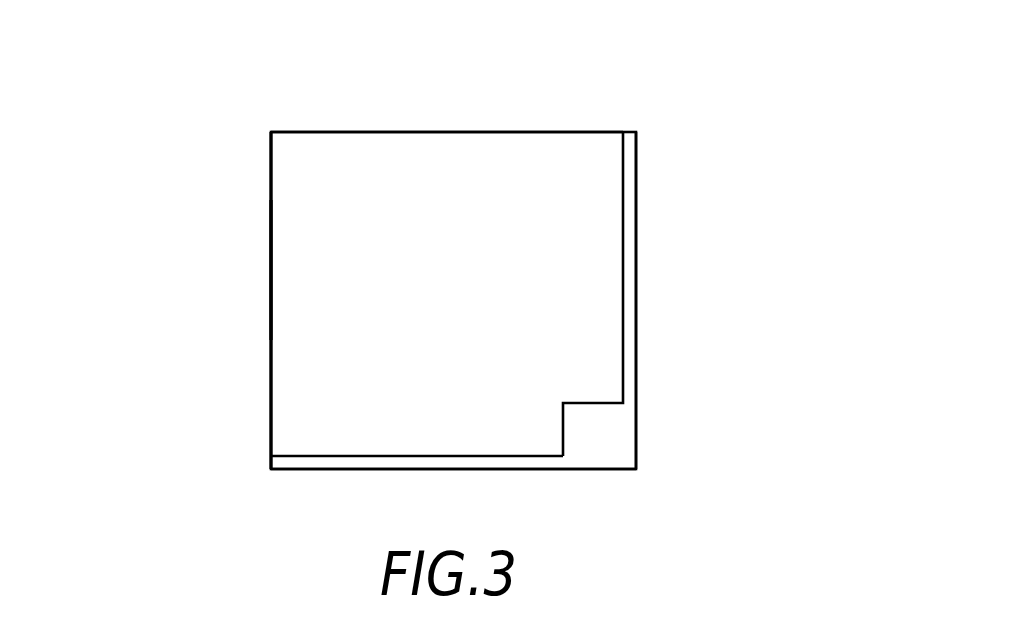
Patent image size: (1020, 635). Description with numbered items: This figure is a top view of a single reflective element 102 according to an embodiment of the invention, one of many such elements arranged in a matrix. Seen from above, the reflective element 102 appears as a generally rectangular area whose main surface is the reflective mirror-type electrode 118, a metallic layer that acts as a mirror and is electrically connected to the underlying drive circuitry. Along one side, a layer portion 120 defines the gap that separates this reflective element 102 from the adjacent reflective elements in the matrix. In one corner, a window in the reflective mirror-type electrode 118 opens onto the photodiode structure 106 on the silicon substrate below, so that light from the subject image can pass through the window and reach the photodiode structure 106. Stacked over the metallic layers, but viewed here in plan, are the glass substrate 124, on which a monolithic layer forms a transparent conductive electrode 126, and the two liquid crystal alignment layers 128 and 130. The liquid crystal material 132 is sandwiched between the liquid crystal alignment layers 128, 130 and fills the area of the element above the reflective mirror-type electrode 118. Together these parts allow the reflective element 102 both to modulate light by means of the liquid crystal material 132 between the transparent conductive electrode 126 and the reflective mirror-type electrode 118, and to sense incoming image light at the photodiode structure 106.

The reflective element 102 is at (464, 89).
The liquid crystal material 132 is at (508, 174).
The glass substrate 124 is at (440, 291).
The reflective mirror-type electrode 118 is at (600, 250).
The layer portion 120 is at (630, 324).
The photodiode structure 106 is at (600, 455).
The transparent conductive electrode 126 is at (284, 227).
The liquid crystal alignment layer 128 is at (285, 267).
The liquid crystal alignment layer 130 is at (296, 315).